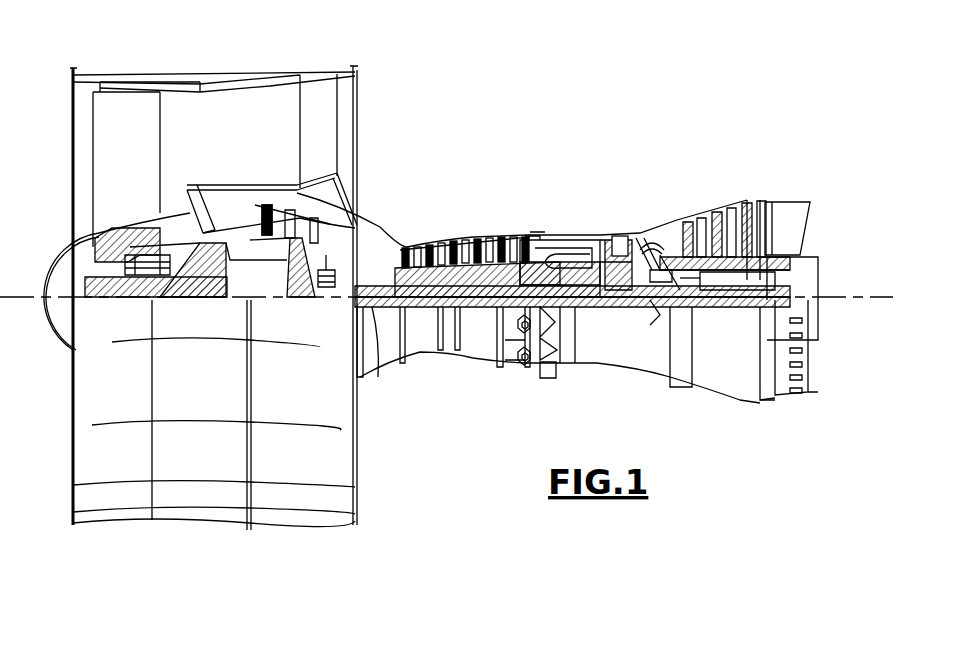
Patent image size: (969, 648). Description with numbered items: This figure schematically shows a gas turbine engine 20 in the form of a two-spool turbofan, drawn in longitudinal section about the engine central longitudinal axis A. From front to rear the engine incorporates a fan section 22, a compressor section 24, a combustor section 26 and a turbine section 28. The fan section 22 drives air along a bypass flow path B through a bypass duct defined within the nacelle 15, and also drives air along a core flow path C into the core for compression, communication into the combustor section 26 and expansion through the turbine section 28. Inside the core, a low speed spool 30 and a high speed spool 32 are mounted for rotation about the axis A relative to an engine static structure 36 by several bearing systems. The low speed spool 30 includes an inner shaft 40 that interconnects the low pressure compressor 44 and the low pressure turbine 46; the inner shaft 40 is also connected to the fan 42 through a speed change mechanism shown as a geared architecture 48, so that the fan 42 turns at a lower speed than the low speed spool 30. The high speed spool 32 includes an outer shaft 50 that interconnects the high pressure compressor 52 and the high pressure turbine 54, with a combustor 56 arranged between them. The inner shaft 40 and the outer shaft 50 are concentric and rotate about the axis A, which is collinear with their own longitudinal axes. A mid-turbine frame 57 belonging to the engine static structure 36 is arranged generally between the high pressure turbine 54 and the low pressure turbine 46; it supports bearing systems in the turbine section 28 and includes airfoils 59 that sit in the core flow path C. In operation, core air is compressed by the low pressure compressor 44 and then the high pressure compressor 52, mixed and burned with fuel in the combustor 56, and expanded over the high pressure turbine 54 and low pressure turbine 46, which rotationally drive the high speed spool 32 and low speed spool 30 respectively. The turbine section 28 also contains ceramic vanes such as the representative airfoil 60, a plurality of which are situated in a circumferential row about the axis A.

The nacelle 15 is at (212, 72).
The gas turbine engine 20 is at (577, 112).
The fan section 22 is at (162, 66).
The compressor section 24 is at (396, 222).
The combustor section 26 is at (568, 218).
The turbine section 28 is at (702, 178).
The low speed spool 30 is at (482, 345).
The high speed spool 32 is at (514, 246).
The engine static structure 36 is at (513, 366).
The inner shaft 40 is at (374, 348).
The fan 42 is at (135, 221).
The low pressure compressor 44 is at (312, 218).
The low pressure turbine 46 is at (718, 210).
The geared architecture 48 is at (219, 287).
The outer shaft 50 is at (577, 300).
The high pressure compressor 52 is at (464, 240).
The high pressure turbine 54 is at (619, 240).
The combustor 56 is at (572, 250).
The mid-turbine frame 57 is at (660, 226).
The airfoils 59 is at (672, 268).
The ceramic airfoil 60 is at (690, 230).
The engine central longitudinal axis A is at (878, 297).
The bypass flow path B is at (192, 135).
The core flow path C is at (218, 217).